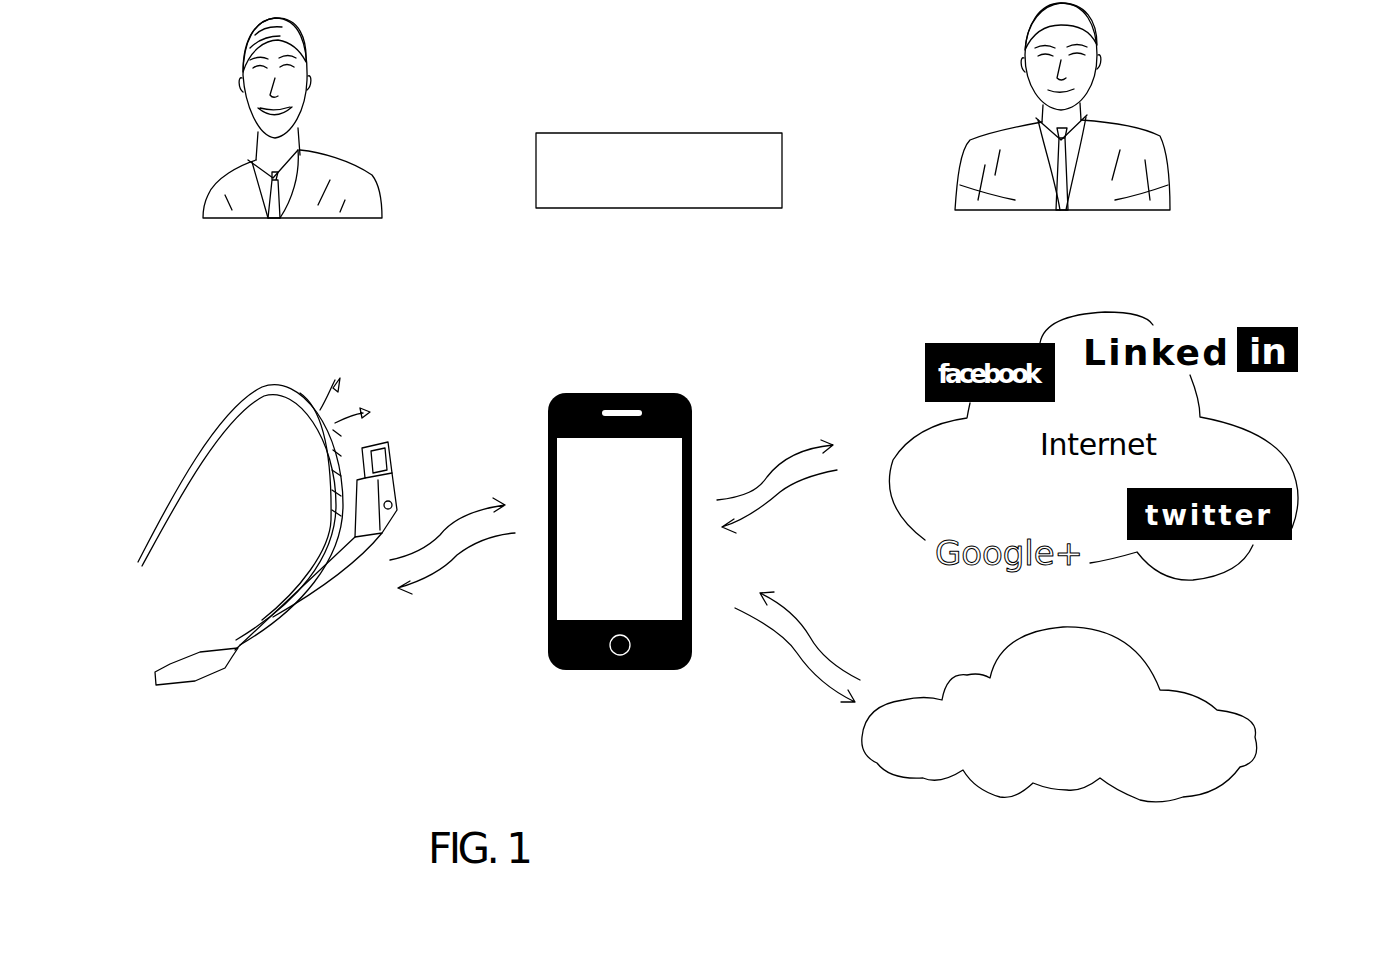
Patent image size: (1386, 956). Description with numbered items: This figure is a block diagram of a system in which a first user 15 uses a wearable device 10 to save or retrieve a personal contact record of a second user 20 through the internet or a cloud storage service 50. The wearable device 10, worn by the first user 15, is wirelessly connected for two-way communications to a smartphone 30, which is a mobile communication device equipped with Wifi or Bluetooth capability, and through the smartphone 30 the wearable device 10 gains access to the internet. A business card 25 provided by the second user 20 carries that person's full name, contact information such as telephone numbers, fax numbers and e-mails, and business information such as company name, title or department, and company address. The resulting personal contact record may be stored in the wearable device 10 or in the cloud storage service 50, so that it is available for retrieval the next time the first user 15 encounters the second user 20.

The wearable device 10 is at (273, 617).
The first user 15 is at (205, 200).
The second user 20 is at (960, 160).
The business card 25 is at (620, 132).
The smartphone 30 is at (545, 618).
The cloud storage service 50 is at (1173, 790).